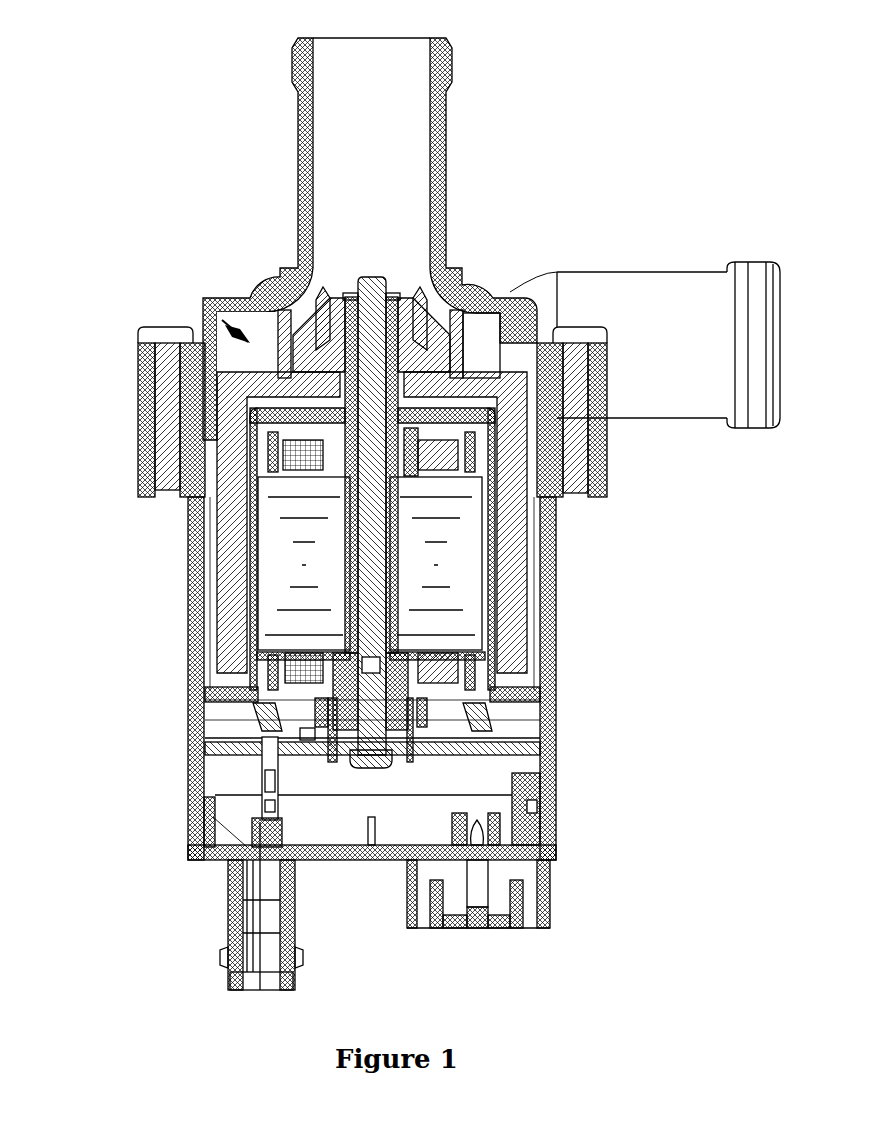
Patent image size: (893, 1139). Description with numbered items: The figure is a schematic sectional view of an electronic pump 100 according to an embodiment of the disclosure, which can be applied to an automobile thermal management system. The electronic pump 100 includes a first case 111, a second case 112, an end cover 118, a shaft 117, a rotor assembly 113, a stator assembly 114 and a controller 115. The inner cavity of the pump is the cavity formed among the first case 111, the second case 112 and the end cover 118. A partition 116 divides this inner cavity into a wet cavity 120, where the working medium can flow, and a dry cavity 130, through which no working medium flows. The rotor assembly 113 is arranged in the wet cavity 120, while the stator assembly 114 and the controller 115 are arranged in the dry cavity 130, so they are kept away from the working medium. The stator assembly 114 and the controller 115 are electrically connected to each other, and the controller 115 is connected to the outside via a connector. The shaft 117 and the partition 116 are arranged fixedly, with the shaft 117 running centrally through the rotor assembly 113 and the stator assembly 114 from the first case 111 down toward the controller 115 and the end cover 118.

The electronic pump 100 is at (170, 148).
The first case 111 is at (255, 297).
The wet cavity 120 is at (205, 314).
The second case 112 is at (176, 534).
The rotor assembly 113 is at (232, 507).
The partition 116 is at (258, 622).
The stator assembly 114 is at (440, 515).
The dry cavity 130 is at (473, 445).
The shaft 117 is at (380, 277).
The controller 115 is at (247, 755).
The end cover 118 is at (207, 858).